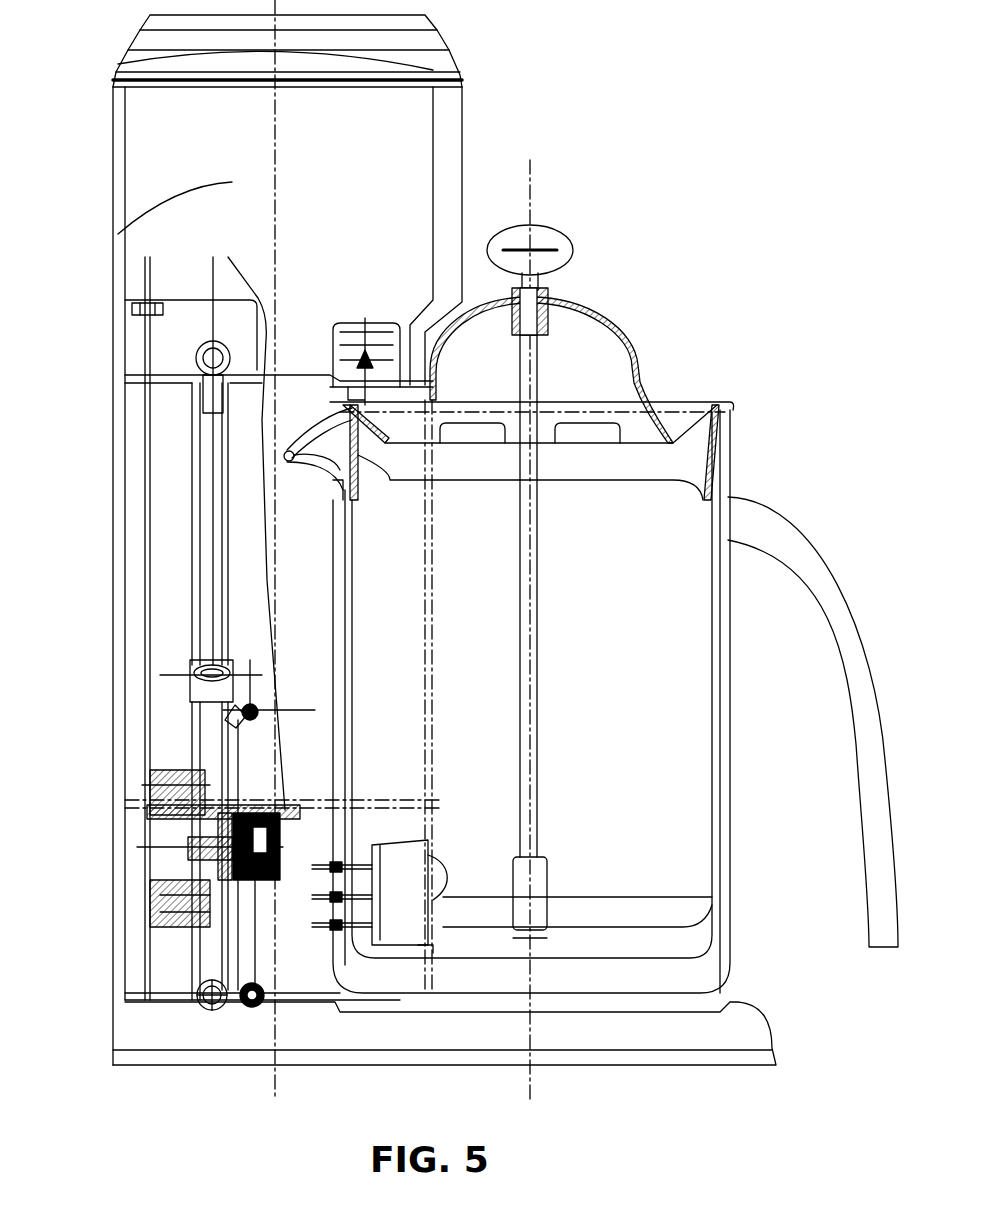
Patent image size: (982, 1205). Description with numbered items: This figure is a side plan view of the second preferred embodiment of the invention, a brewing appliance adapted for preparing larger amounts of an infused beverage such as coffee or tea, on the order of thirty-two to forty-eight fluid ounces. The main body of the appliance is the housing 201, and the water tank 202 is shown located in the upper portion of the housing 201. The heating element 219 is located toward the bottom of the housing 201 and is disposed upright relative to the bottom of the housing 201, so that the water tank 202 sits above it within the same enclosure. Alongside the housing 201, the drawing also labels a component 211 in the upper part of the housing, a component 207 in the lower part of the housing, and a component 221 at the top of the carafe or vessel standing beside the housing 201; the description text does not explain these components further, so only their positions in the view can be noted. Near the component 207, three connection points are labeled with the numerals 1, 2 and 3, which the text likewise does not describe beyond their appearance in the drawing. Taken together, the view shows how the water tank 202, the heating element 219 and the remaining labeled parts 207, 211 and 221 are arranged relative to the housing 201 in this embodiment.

The housing 201 is at (112, 640).
The water tank 202 is at (228, 257).
The valve 211 is at (360, 368).
The switch 207 is at (398, 866).
The heating element 219 is at (198, 990).
The lid 221 is at (573, 375).
The terminal 1 is at (330, 924).
The terminal 2 is at (330, 896).
The terminal 3 is at (330, 866).